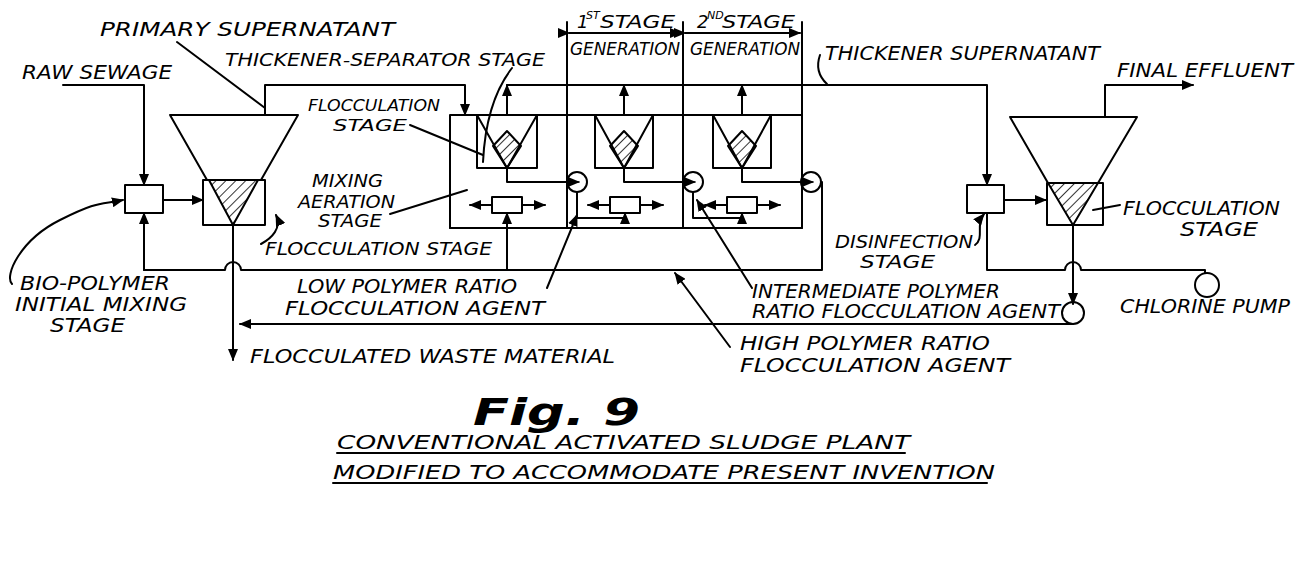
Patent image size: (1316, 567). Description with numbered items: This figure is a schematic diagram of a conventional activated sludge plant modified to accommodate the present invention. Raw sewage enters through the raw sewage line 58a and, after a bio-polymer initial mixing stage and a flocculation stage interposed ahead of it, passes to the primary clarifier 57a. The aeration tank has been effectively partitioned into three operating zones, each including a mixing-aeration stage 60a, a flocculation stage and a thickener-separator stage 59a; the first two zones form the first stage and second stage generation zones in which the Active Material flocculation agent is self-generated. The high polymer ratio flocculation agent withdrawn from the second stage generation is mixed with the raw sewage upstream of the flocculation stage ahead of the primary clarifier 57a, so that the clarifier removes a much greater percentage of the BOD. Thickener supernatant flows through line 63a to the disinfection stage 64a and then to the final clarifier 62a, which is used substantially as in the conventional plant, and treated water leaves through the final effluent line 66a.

The primary clarifier 57a is at (277, 152).
The raw sewage inlet line 58a is at (82, 87).
The thickener-separator stage 59a is at (390, 82).
The mixing aeration stage 60a is at (617, 230).
The final clarifier 62a is at (1118, 153).
The thickener supernatant line 63a is at (985, 121).
The disinfection stage 64a is at (967, 198).
The final effluent line 66a is at (1150, 86).